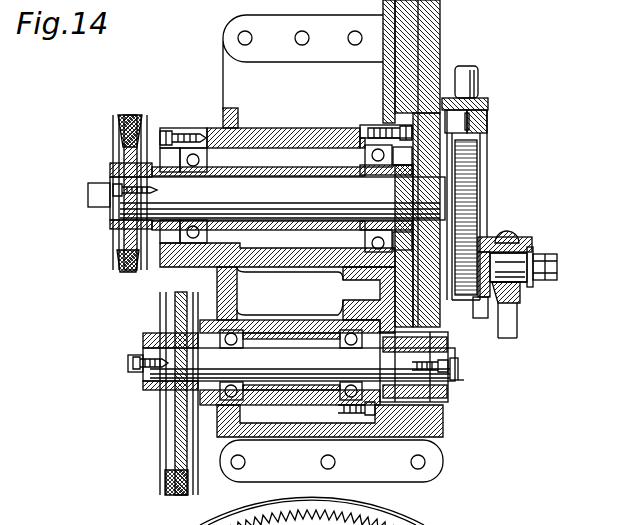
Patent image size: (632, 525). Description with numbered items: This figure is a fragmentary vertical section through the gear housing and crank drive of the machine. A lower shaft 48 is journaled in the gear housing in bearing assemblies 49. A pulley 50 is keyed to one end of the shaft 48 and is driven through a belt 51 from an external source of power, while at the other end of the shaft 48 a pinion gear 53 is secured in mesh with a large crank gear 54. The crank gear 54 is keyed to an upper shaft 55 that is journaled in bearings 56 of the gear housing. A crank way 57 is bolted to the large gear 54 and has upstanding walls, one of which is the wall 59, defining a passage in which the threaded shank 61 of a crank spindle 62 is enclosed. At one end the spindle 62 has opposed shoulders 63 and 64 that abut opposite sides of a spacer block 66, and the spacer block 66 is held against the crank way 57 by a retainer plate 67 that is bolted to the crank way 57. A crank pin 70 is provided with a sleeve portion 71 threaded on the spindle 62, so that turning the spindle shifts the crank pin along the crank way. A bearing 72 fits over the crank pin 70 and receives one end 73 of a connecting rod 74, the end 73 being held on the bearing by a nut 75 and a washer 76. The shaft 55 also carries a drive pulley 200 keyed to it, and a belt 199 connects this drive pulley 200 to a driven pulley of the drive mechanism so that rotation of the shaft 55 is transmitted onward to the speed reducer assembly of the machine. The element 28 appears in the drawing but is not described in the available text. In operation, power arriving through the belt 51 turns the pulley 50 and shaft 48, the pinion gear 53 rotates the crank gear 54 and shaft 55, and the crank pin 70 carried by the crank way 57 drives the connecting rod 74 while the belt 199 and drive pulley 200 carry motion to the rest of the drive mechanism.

The boss 28 is at (533, 232).
The shaft 48 is at (287, 361).
The bearing assemblies 49 is at (238, 328).
The pulley 50 is at (176, 430).
The belt 51 is at (172, 494).
The pinion gear 53 is at (421, 398).
The crank gear 54 is at (442, 320).
The shaft 55 is at (260, 178).
The bearings 56 is at (212, 140).
The crank way 57 is at (481, 160).
The upstanding wall 59 is at (484, 212).
The threaded shank 61 is at (475, 193).
The crank spindle 62 is at (480, 82).
The shoulder 63 is at (480, 117).
The shoulder 64 is at (480, 134).
The spacer block 66 is at (480, 120).
The retainer plate 67 is at (481, 104).
The crank pin 70 is at (516, 290).
The sleeve portion 71 is at (478, 238).
The bearing 72 is at (518, 302).
The end of connecting rod 73 is at (523, 246).
The connecting rod 74 is at (520, 330).
The nut 75 is at (554, 268).
The washer 76 is at (531, 287).
The belt 199 is at (126, 272).
The drive pulley 200 is at (117, 256).